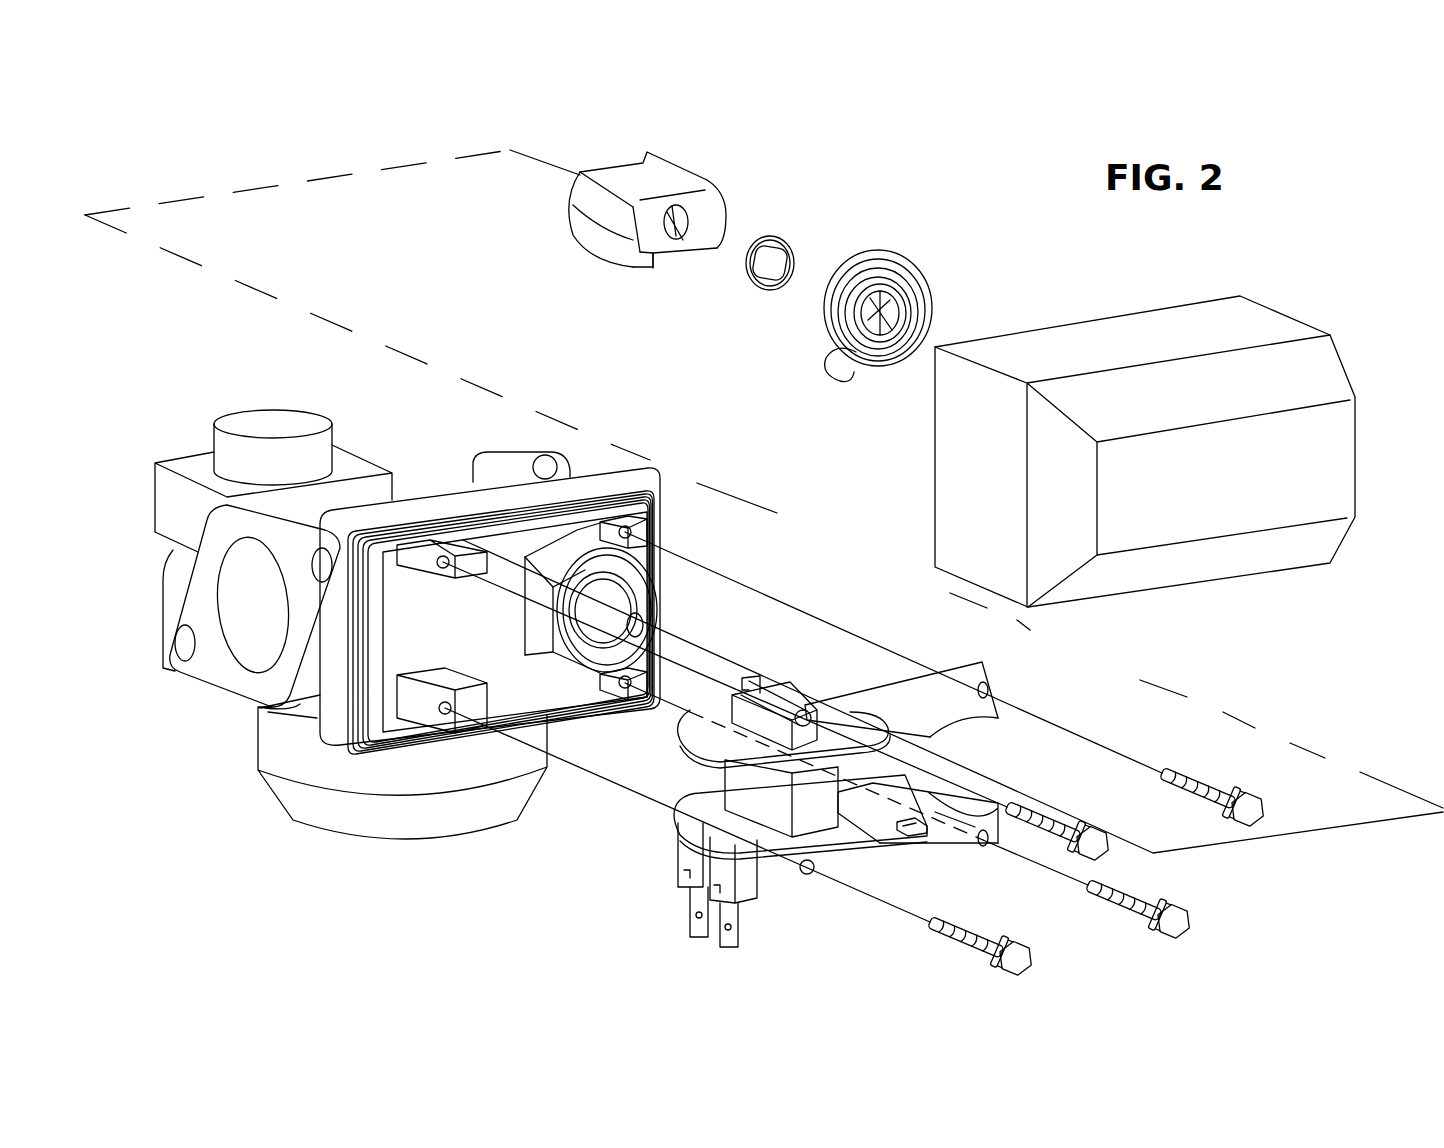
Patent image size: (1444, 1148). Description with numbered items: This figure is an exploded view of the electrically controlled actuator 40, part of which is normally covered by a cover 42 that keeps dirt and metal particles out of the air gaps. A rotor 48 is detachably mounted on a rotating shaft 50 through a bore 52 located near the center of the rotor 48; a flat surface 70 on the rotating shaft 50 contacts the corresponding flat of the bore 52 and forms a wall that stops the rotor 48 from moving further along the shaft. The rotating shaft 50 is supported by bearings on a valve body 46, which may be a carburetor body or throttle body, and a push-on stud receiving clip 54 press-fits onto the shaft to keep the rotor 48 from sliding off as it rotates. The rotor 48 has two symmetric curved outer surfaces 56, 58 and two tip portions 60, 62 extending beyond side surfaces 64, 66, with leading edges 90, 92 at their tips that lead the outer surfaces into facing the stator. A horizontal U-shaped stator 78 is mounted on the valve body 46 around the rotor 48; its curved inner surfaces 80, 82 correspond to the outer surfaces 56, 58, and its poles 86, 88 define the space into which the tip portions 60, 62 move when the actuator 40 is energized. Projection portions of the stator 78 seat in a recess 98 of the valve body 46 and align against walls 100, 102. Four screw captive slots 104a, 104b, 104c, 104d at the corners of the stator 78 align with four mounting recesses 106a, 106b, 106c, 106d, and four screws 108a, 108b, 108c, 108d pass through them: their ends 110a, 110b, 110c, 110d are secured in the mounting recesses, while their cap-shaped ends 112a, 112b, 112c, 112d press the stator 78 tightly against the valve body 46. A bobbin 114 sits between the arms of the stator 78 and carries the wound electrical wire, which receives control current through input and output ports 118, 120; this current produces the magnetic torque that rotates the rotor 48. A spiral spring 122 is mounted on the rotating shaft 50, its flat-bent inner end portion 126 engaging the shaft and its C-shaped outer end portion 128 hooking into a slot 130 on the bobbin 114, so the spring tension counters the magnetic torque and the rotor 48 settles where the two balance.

The electrically controlled actuator 40 is at (1183, 400).
The cover 42 is at (1325, 460).
The valve body 46 is at (451, 620).
The rotor 48 is at (712, 244).
The rotating shaft 50 is at (613, 612).
The bore 52 is at (935, 345).
The push-on stud receiving clip 54 is at (793, 237).
The curved outer surface 56 is at (590, 220).
The curved outer surface 58 is at (727, 222).
The tip portion 60 is at (648, 255).
The tip portion 62 is at (713, 183).
The side surface 64 is at (687, 252).
The side surface 66 is at (623, 175).
The flat surface 70 is at (600, 592).
The stator 78 is at (901, 789).
The curved inner surface 80 is at (960, 803).
The curved inner surface 82 is at (957, 722).
The pole 86 is at (947, 843).
The pole 88 is at (945, 695).
The leading edge 90 is at (655, 268).
The leading edge 92 is at (680, 167).
The recess 98 is at (558, 622).
The wall 100 is at (552, 653).
The wall 102 is at (578, 532).
The screw captive slot 104a is at (803, 877).
The screw captive slot 104b is at (988, 850).
The screw captive slot 104c is at (763, 692).
The screw captive slot 104d is at (988, 688).
The mounting recess 106a is at (443, 713).
The mounting recess 106b is at (625, 688).
The mounting recess 106c is at (443, 567).
The mounting recess 106d is at (629, 533).
The screw 108a is at (985, 947).
The screw 108b is at (1164, 920).
The screw 108c is at (1110, 815).
The screw 108d is at (1226, 761).
The screw end 110a is at (966, 937).
The screw end 110b is at (1124, 900).
The screw end 110c is at (1043, 822).
The screw end 110d is at (1198, 788).
The cap-shaped screw end 112a is at (1013, 957).
The cap-shaped screw end 112b is at (1171, 920).
The cap-shaped screw end 112c is at (1090, 842).
The cap-shaped screw end 112d is at (1245, 808).
The bobbin 114 is at (752, 832).
The input port 118 is at (693, 913).
The output port 120 is at (720, 943).
The spiral spring 122 is at (881, 305).
The inner end portion 126 is at (903, 297).
The outer end portion 128 is at (830, 362).
The slot 130 is at (900, 832).